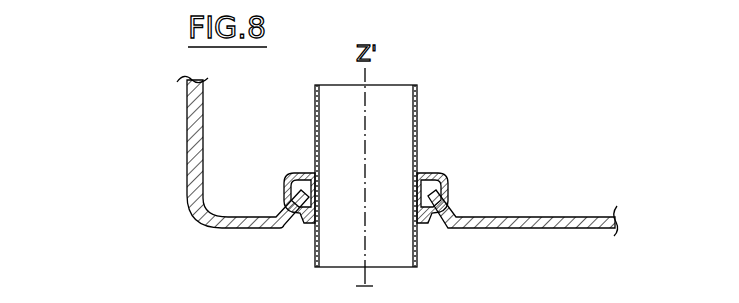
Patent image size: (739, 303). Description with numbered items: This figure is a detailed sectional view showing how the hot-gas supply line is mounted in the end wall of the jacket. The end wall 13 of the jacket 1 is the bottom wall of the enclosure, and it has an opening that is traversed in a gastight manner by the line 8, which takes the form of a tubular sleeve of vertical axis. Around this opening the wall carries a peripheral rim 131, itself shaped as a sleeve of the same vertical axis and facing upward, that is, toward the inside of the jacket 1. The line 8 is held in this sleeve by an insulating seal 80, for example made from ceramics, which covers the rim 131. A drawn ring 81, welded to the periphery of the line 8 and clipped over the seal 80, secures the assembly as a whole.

The line 8 is at (316, 129).
The jacket 1 is at (233, 228).
The end wall of the jacket 13 is at (498, 229).
The insulating seal 80 is at (382, 154).
The drawn ring 81 is at (295, 174).
The peripheral rim 131 is at (447, 188).